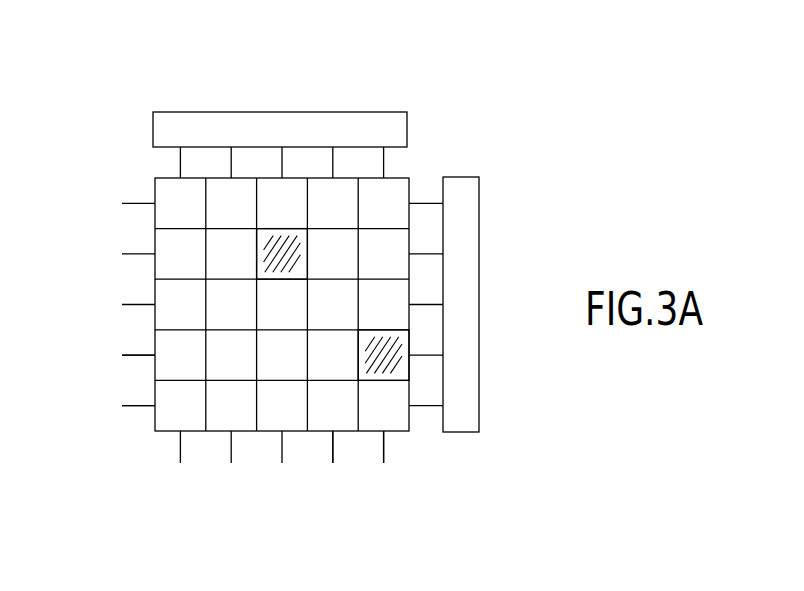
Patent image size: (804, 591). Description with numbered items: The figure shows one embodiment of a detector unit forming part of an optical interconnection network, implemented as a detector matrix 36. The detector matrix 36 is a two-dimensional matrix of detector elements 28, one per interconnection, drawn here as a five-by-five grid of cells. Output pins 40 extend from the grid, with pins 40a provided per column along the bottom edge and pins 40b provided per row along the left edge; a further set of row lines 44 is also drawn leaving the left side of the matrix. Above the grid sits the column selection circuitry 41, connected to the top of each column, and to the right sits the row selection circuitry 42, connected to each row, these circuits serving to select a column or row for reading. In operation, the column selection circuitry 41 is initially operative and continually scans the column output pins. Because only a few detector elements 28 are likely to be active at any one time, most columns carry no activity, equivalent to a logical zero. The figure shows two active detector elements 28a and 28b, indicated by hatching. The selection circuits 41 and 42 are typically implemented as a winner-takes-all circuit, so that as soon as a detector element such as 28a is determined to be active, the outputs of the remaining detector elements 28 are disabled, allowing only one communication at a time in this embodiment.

The detector matrix 36 is at (486, 61).
The column selection circuitry 41 is at (258, 112).
The row selection circuitry 42 is at (480, 243).
The detector element 28 is at (383, 257).
The active detector element 28a is at (283, 250).
The active detector element 28b is at (388, 365).
The output pins 40 is at (284, 475).
The column output pins 40a is at (386, 458).
The row output pins 40b is at (130, 357).
The row lines 44 is at (62, 254).